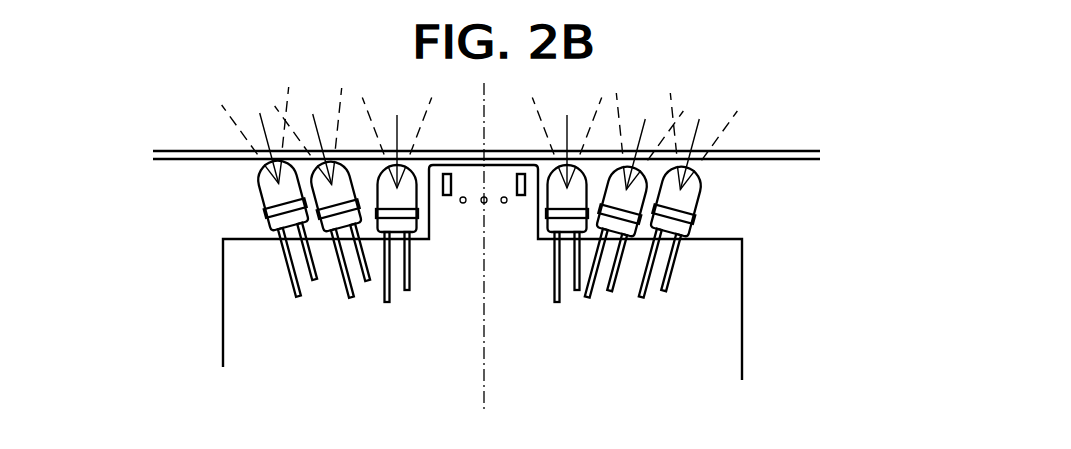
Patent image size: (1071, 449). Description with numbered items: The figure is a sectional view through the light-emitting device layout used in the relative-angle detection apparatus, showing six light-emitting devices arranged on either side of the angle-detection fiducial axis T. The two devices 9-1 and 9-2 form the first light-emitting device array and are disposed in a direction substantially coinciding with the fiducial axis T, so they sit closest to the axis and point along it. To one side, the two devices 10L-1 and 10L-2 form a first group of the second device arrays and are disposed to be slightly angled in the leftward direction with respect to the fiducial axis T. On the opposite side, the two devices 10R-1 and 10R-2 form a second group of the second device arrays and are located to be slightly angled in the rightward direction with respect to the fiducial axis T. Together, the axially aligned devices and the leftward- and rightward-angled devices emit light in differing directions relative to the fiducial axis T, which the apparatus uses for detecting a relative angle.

The light-emitting device 9-1 is at (418, 198).
The light-emitting device 9-2 is at (548, 200).
The light-emitting device 10L-1 is at (263, 206).
The light-emitting device 10L-2 is at (313, 200).
The light-emitting device 10R-1 is at (648, 198).
The light-emitting device 10R-2 is at (695, 201).
The angle-detection fiducial axis T is at (484, 384).